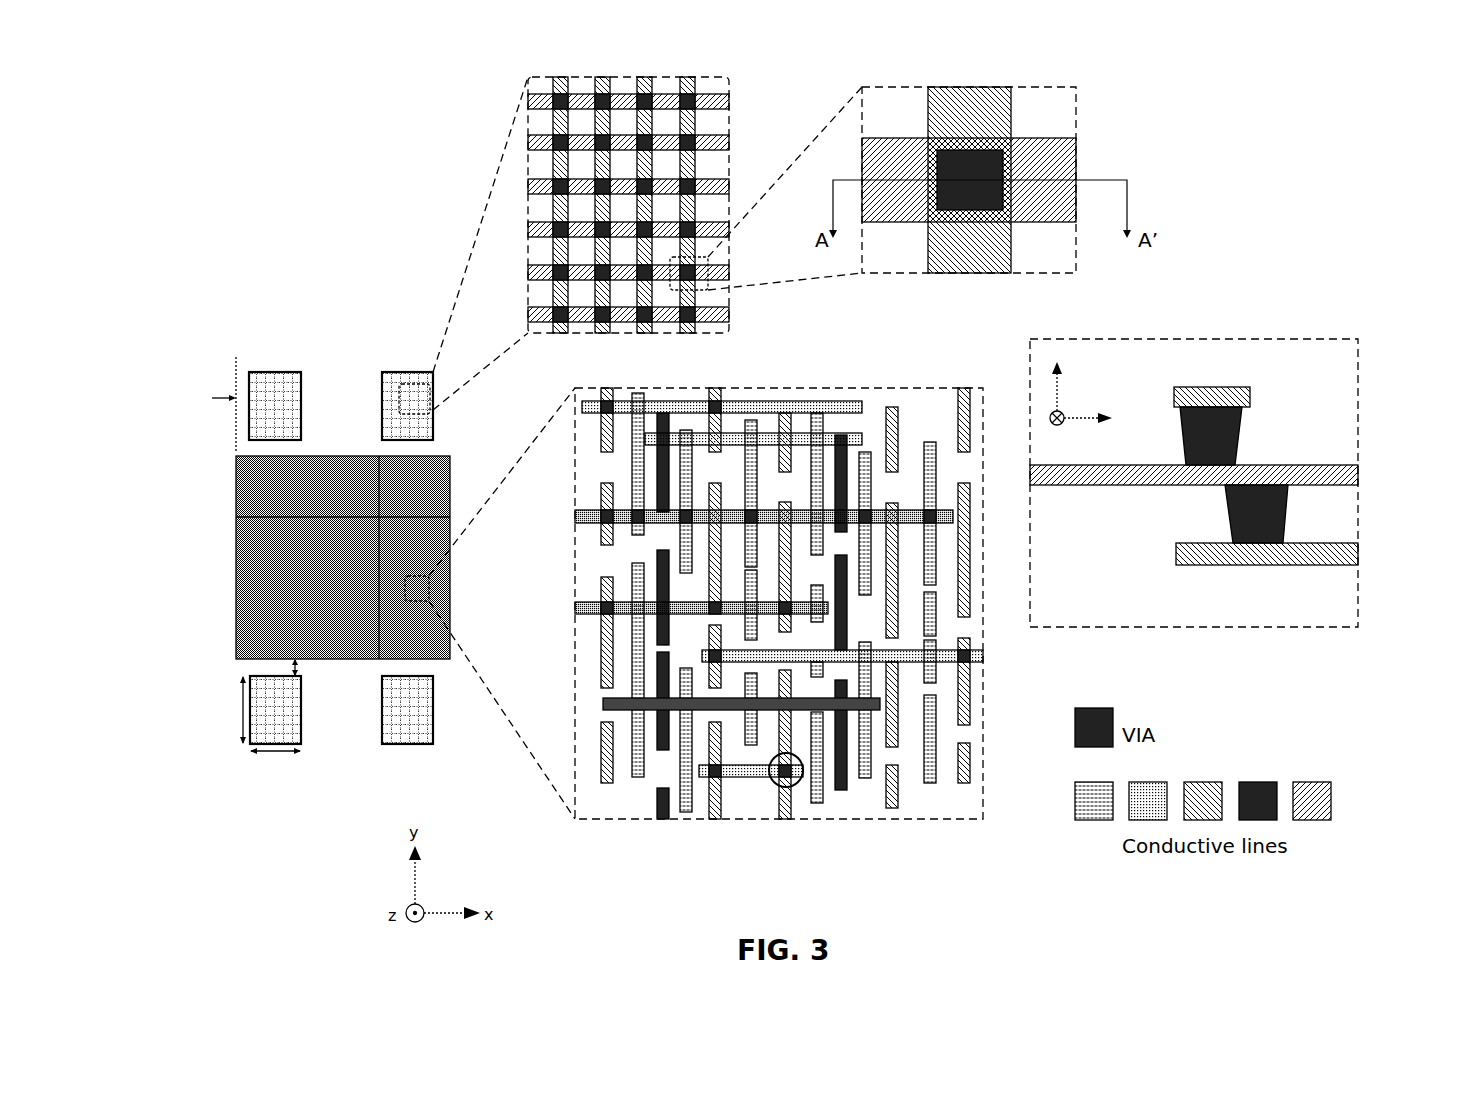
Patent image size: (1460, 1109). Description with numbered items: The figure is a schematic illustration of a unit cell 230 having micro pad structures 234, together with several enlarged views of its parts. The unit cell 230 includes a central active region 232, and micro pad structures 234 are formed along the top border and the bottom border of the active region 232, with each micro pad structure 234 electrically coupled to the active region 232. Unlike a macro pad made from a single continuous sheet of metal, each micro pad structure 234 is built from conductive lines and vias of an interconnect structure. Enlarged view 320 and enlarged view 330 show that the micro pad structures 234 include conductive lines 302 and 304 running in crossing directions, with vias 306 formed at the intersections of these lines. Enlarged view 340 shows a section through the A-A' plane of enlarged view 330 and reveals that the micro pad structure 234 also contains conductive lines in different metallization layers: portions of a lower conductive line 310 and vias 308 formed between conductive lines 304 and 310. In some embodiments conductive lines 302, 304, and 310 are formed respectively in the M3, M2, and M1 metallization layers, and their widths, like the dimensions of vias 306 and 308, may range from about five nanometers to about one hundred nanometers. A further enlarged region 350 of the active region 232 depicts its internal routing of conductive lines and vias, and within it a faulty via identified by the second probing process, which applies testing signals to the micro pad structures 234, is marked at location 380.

The unit cell 230 is at (198, 536).
The active region 232 is at (247, 490).
The micro pad structures 234 is at (390, 388).
The conductive line 302 is at (972, 92).
The conductive line 304 is at (1075, 163).
The via 306 is at (1003, 150).
The via 308 is at (1285, 523).
The conductive line 310 is at (1350, 557).
The enlarged view 320 is at (585, 77).
The enlarged view 330 is at (862, 87).
The enlarged view 340 is at (1228, 504).
The routing region 350 is at (880, 820).
The location 380 is at (780, 786).